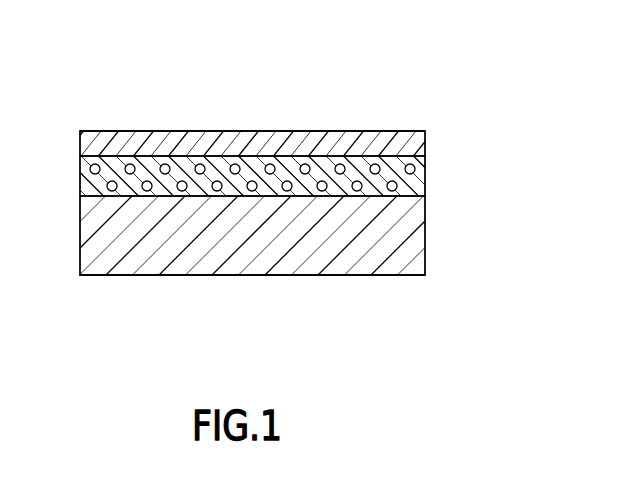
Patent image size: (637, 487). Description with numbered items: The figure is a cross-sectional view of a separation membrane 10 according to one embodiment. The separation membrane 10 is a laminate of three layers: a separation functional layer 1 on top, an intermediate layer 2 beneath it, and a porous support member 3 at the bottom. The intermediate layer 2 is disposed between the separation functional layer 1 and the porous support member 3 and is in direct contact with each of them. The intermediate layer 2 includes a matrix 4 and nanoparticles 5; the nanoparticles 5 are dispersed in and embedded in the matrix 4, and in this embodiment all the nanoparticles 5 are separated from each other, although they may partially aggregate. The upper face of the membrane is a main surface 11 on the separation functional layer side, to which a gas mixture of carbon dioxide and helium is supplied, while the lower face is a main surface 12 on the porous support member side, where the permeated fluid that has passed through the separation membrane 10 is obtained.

The separation membrane 10 is at (82, 95).
The separation functional layer 1 is at (426, 135).
The intermediate layer 2 is at (279, 183).
The porous support member 3 is at (408, 241).
The matrix 4 is at (426, 160).
The nanoparticles 5 is at (426, 190).
The main surface 11 is at (321, 132).
The main surface 12 is at (323, 276).